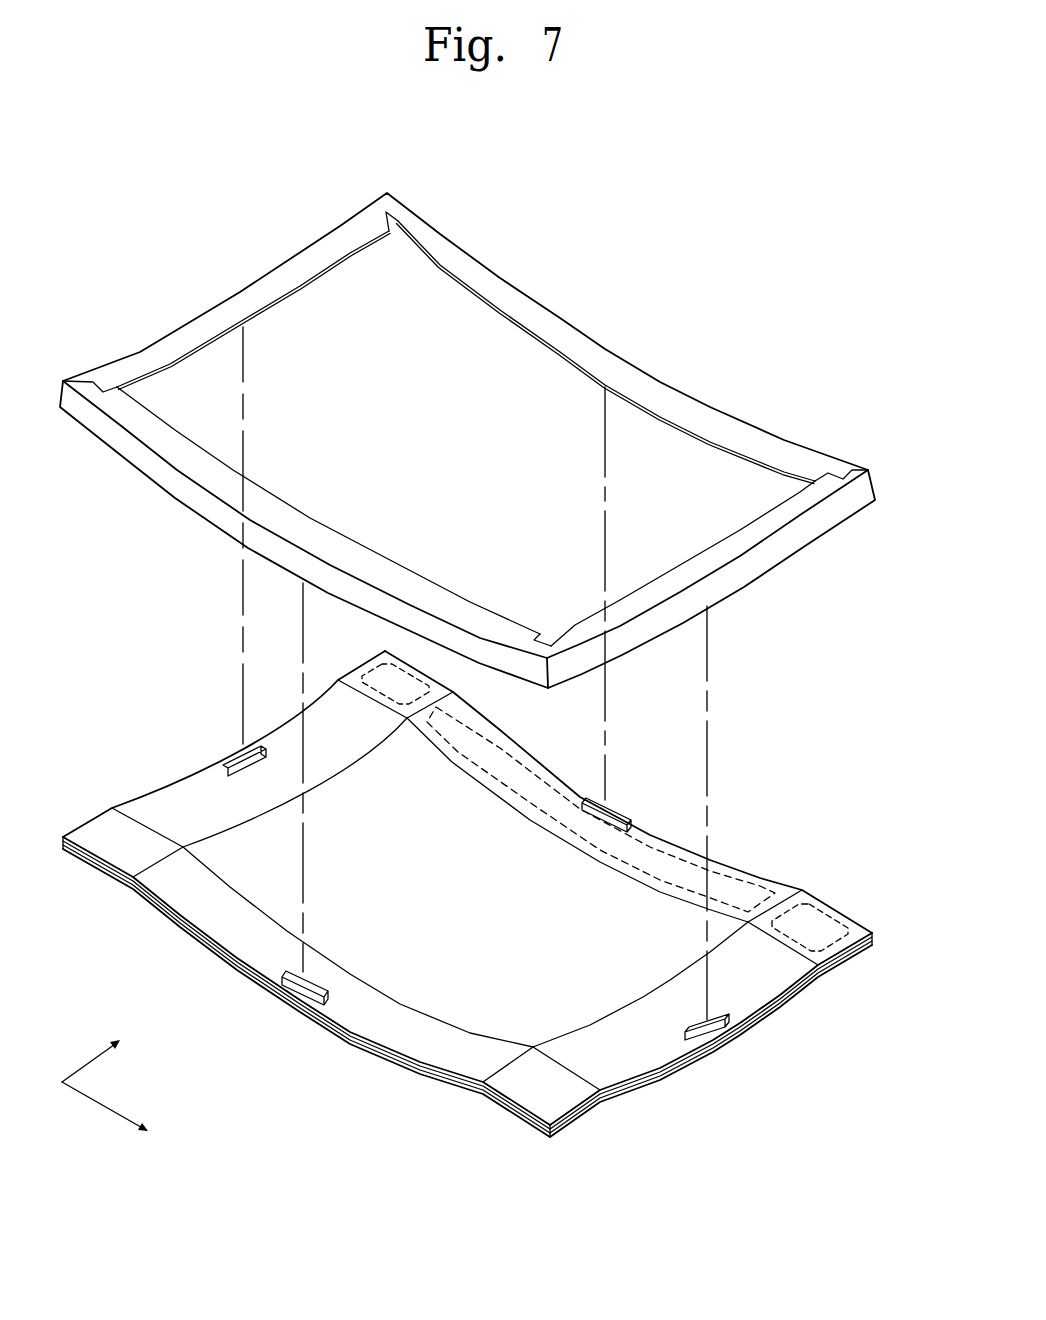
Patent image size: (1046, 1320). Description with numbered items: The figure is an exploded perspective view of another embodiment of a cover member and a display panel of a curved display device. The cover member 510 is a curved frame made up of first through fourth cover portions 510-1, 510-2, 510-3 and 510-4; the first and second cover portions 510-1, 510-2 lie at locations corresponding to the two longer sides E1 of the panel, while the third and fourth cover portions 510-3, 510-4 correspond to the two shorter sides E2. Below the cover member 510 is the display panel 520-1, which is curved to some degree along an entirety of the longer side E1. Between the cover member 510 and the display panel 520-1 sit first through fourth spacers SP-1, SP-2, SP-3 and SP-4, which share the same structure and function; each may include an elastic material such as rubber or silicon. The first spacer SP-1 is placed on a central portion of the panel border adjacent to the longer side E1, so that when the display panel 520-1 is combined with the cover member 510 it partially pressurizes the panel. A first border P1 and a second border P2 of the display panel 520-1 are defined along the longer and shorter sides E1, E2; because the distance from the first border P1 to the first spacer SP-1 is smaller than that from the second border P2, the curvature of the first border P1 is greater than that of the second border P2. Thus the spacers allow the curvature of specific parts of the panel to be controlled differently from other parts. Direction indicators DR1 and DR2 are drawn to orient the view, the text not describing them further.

The cover member 510 is at (483, 440).
The first cover portion 510-1 is at (707, 413).
The second cover portion 510-2 is at (210, 472).
The third cover portion 510-3 is at (740, 548).
The fourth cover portion 510-4 is at (148, 354).
The display panel 520-1 is at (469, 876).
The first spacer SP-1 is at (610, 805).
The second spacer SP-2 is at (280, 972).
The third spacer SP-3 is at (732, 1003).
The fourth spacer SP-4 is at (232, 762).
The first border P1 is at (638, 834).
The second border P2 is at (370, 668).
The longer side E1 is at (343, 1027).
The shorter side E2 is at (152, 793).
The first direction DR1 is at (132, 1115).
The second direction DR2 is at (118, 1057).